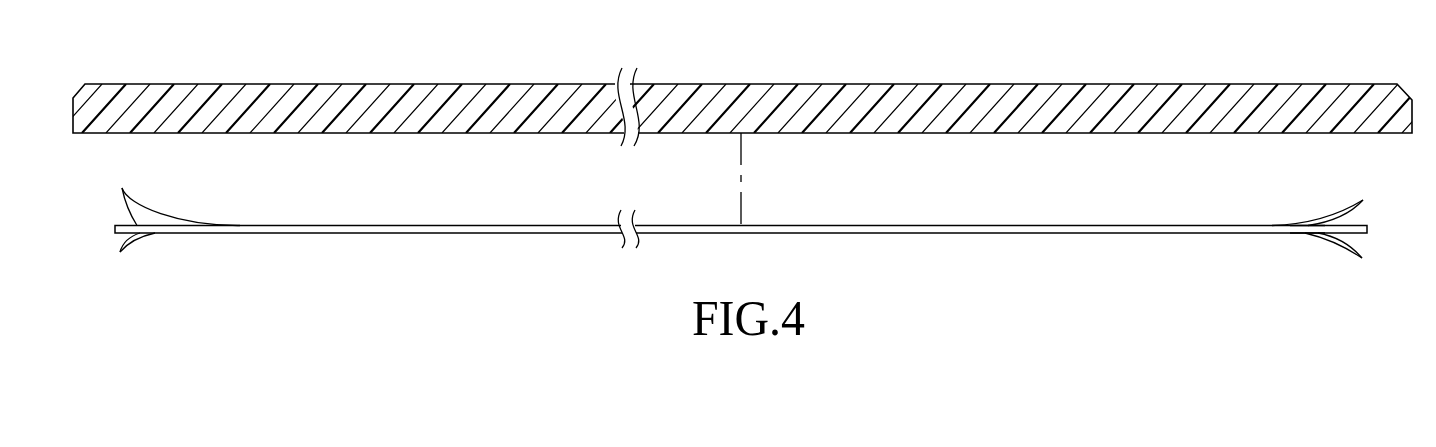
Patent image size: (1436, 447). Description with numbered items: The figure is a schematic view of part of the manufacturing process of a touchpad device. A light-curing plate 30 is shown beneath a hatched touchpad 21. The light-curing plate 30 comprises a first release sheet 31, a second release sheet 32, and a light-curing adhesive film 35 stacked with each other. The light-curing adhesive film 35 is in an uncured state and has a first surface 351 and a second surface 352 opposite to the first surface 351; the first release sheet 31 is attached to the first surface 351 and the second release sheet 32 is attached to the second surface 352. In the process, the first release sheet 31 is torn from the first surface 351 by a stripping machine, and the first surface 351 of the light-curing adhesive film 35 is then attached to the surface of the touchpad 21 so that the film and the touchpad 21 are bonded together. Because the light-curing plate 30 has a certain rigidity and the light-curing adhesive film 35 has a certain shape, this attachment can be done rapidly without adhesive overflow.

The touchpad 21 is at (1212, 97).
The light-curing plate 30 is at (741, 229).
The light-curing adhesive film 35 is at (1243, 225).
The first surface 351 is at (1307, 222).
The second surface 352 is at (1307, 238).
The first release sheet 31 is at (1349, 206).
The second release sheet 32 is at (1347, 248).